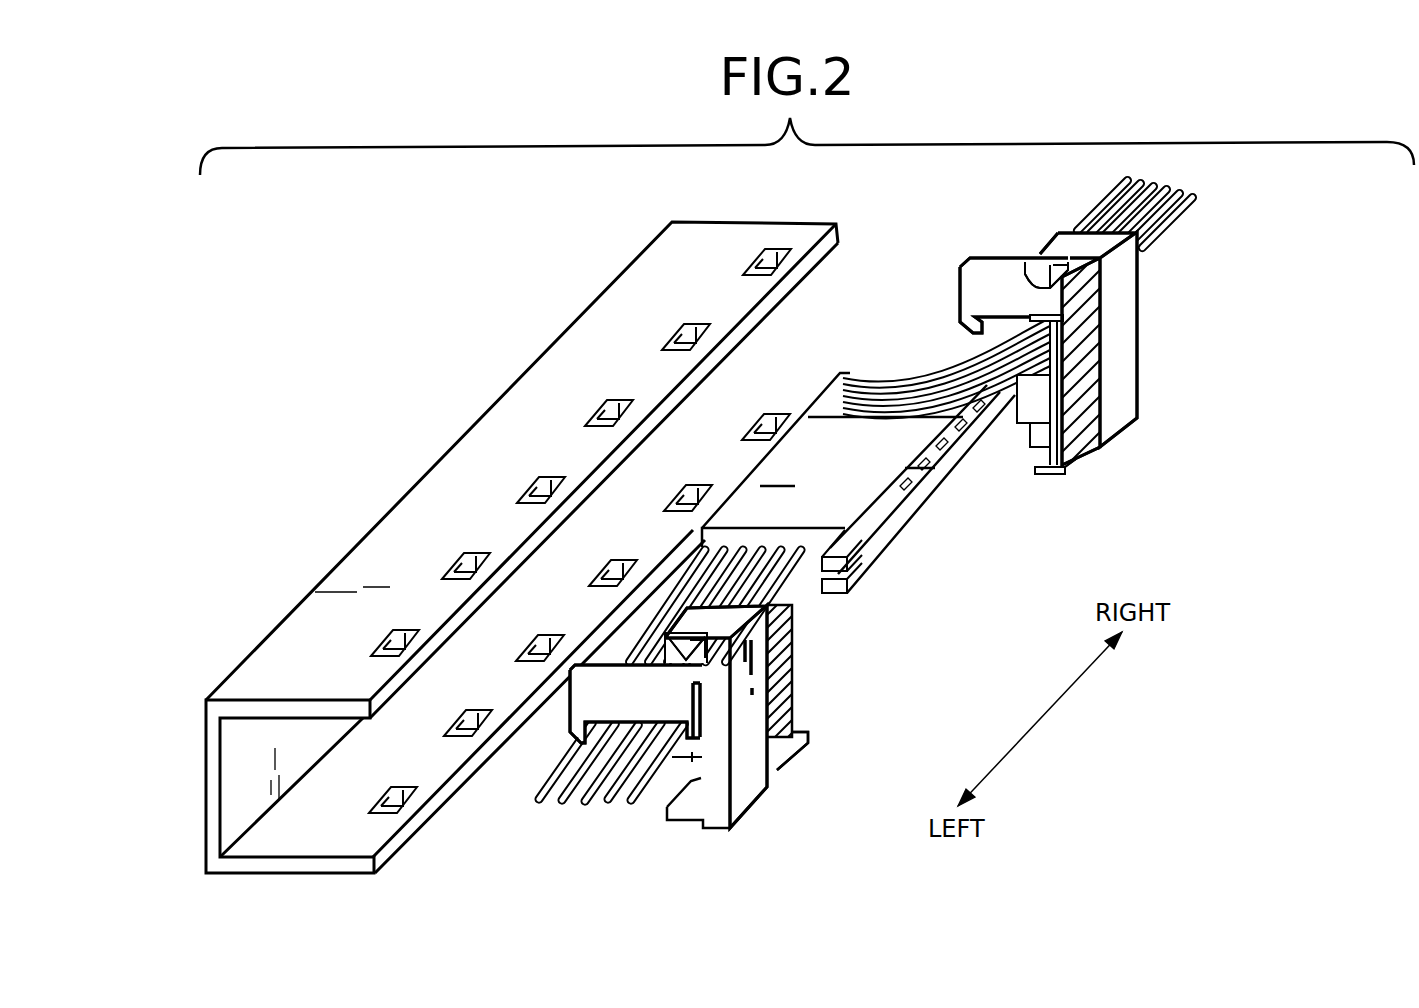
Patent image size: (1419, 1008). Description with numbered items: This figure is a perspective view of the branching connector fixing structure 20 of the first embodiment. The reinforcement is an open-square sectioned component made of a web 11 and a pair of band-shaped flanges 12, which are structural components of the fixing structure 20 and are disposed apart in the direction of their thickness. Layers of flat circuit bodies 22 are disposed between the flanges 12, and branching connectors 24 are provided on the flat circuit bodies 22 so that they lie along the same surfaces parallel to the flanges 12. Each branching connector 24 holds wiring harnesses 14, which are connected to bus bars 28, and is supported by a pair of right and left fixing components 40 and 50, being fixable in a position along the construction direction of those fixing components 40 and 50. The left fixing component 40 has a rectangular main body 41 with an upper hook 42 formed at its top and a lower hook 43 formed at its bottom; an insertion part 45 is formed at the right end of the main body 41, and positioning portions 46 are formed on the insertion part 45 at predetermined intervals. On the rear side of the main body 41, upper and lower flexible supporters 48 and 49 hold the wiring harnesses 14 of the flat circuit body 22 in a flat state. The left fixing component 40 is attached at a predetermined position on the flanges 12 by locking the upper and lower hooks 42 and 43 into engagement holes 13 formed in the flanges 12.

The web 11 is at (250, 750).
The flange 12 is at (313, 632).
The engagement hole 13 is at (462, 562).
The wiring harness 14 is at (627, 805).
The branching connector fixing structure 20 is at (741, 461).
The flat circuit body 22 is at (878, 382).
The branching connector 24 is at (843, 375).
The bus bar 28 is at (970, 465).
The left fixing component 40 is at (713, 746).
The rectangular main body 41 is at (1118, 308).
The upper hook 42 is at (1040, 270).
The lower hook 43 is at (680, 808).
The insertion part 45 is at (1063, 465).
The positioning portion 46 is at (790, 650).
The upper flexible supporter 48 is at (982, 280).
The lower flexible supporter 49 is at (1037, 443).
The right fixing component 50 is at (1145, 380).